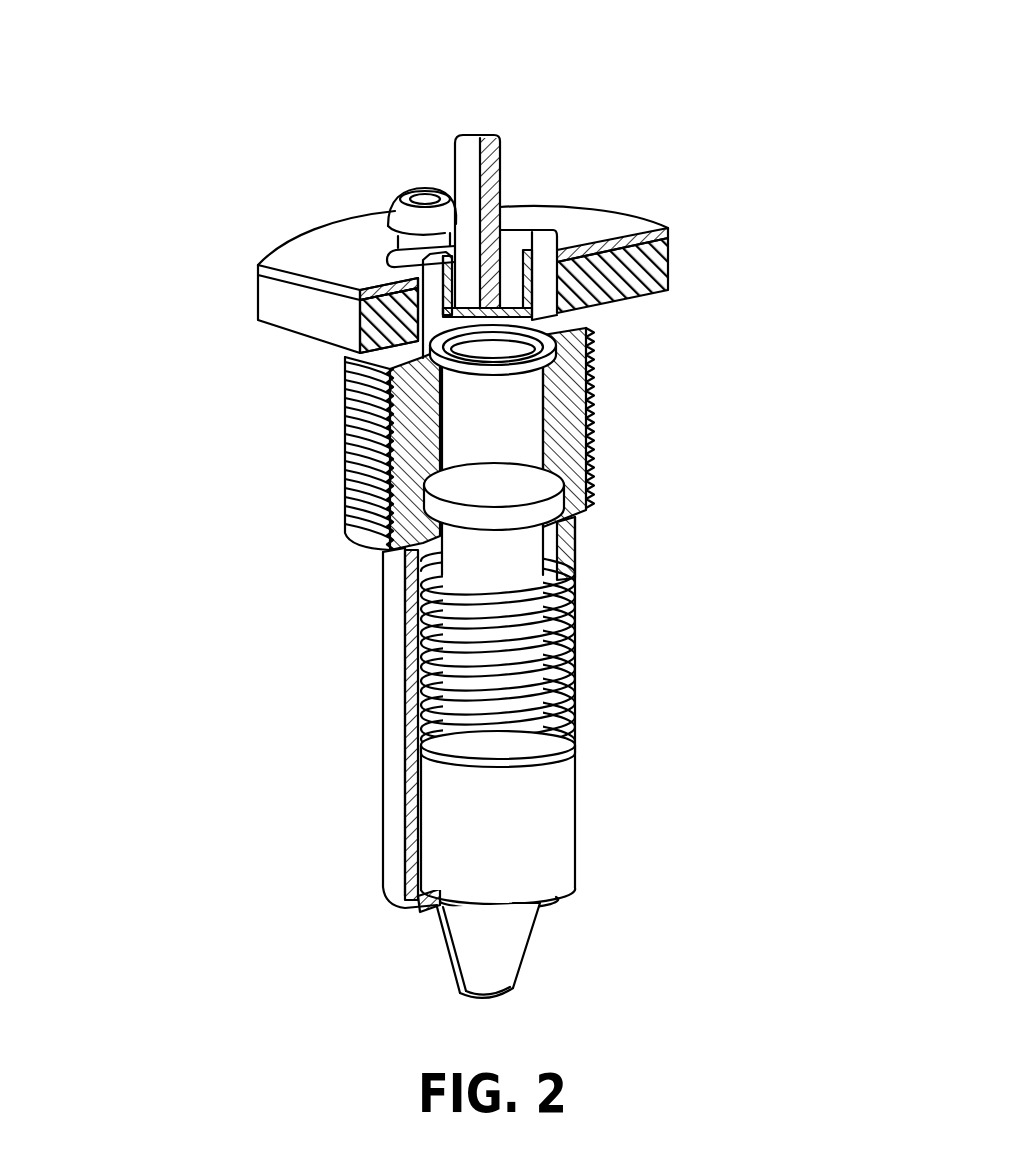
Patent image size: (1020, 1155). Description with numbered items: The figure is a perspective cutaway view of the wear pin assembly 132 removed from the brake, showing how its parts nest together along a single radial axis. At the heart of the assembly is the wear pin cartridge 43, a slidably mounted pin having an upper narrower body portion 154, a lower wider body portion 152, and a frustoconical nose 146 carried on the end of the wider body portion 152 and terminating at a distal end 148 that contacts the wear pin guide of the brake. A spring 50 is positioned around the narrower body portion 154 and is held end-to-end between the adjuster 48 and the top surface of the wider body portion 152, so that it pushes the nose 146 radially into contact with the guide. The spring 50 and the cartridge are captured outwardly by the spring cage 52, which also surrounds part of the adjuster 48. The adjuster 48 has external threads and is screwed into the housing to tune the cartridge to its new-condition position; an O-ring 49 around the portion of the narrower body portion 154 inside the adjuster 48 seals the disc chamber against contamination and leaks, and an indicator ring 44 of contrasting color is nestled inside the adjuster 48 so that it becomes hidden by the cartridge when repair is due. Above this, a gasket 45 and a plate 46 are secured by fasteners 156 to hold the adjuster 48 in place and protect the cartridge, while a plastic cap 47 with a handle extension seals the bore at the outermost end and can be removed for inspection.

The wear pin assembly 132 is at (436, 527).
The cap 47 is at (508, 131).
The fasteners 156 is at (393, 188).
The plate 46 is at (296, 228).
The gasket 45 is at (260, 292).
The ring 44 is at (583, 346).
The adjuster 48 is at (412, 443).
The O-ring 49 is at (575, 486).
The narrower body portion 154 is at (515, 550).
The spring cage 52 is at (386, 691).
The spring 50 is at (562, 705).
The wider body portion 152 is at (548, 850).
The frustoconical nose 146 is at (518, 932).
The wear pin cartridge 43 is at (434, 892).
The distal end 148 is at (507, 978).